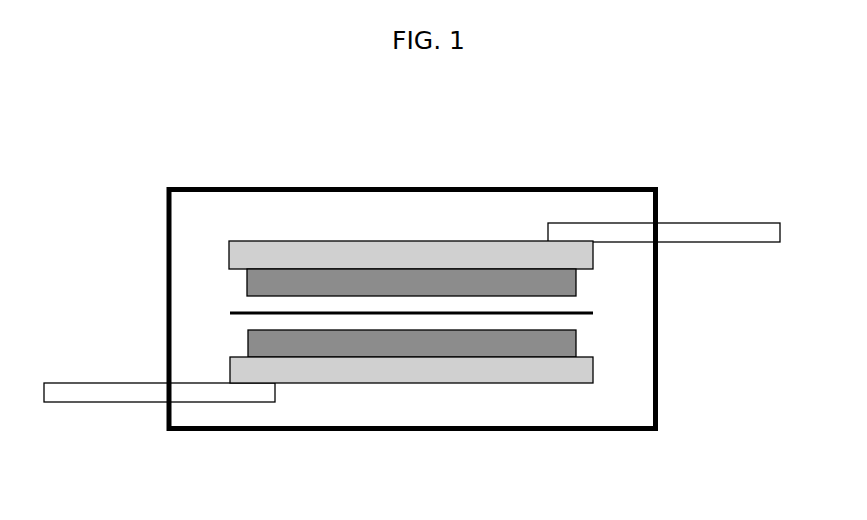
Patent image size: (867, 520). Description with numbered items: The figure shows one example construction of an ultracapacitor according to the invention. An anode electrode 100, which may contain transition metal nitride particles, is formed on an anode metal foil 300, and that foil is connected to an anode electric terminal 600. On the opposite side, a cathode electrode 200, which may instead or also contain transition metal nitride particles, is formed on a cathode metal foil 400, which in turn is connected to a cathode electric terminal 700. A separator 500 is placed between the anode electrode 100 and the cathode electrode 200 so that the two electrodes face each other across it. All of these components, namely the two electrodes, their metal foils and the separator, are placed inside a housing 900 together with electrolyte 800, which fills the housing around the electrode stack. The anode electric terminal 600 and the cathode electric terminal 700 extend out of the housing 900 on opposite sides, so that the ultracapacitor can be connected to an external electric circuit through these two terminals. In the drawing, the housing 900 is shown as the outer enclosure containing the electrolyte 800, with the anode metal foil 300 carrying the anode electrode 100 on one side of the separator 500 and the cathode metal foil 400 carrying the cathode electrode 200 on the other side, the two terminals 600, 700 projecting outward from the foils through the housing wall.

The anode electrode 100 is at (576, 288).
The cathode electrode 200 is at (576, 343).
The metal foil for anode 300 is at (593, 260).
The metal foil for cathode 400 is at (593, 378).
The separator 500 is at (603, 314).
The anode electric terminal 600 is at (690, 213).
The cathode electric terminal 700 is at (98, 418).
The electrolyte 800 is at (450, 205).
The housing 900 is at (585, 180).